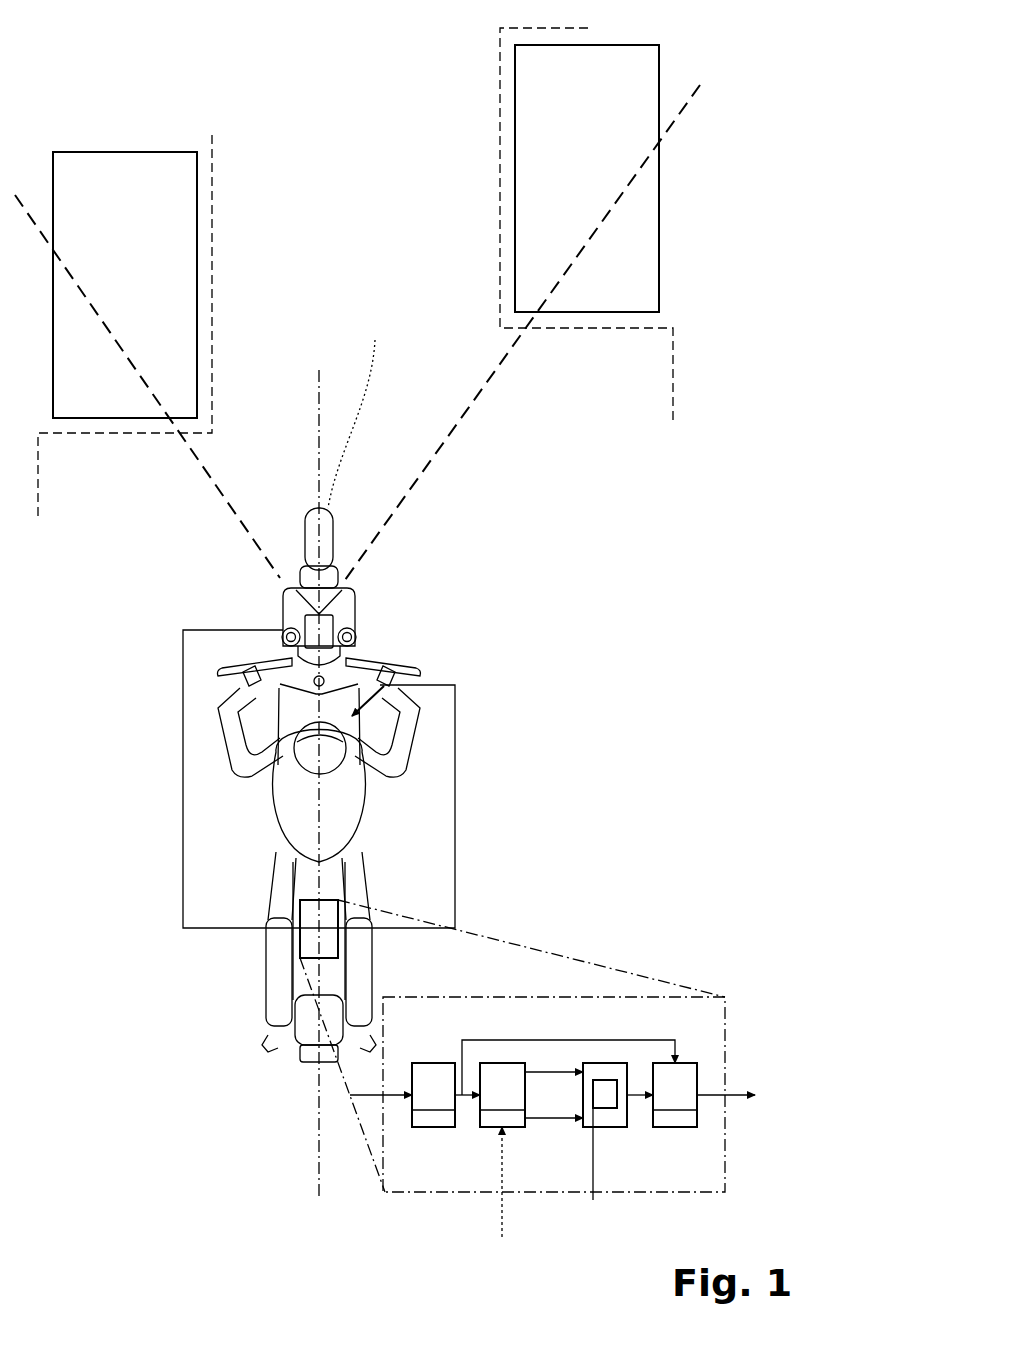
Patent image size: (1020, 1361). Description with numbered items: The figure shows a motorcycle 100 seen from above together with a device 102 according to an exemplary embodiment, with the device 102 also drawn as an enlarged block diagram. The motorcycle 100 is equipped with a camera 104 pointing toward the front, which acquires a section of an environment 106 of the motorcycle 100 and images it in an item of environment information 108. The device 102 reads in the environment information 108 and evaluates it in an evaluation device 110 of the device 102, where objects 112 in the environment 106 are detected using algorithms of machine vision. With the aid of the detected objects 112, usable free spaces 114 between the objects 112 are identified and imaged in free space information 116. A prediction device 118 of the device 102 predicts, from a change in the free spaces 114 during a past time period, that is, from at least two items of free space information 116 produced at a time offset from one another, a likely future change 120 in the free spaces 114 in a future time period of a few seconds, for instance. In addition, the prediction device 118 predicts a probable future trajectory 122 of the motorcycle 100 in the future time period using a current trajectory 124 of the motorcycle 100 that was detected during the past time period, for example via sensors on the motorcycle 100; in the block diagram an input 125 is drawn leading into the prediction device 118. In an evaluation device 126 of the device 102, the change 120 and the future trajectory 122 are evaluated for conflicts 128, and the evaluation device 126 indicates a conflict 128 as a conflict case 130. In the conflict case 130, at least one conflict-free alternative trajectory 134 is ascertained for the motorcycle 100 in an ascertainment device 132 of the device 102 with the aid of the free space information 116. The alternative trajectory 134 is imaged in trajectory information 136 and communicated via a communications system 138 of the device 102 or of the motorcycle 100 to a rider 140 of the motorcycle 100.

The motorcycle 100 is at (340, 518).
The device 102 is at (330, 940).
The camera 104 is at (300, 614).
The environment 106 is at (276, 128).
The environment information 108 is at (183, 776).
The evaluation device 110 is at (420, 1055).
The objects 112 is at (76, 150).
The free spaces 114 is at (338, 268).
The free space information 116 is at (468, 1102).
The prediction device 118 is at (472, 992).
The future change 120 is at (548, 1070).
The future trajectory 122 is at (318, 408).
The current trajectory 124 is at (318, 1166).
The input signal 125 is at (502, 1220).
The evaluation device 126 is at (607, 1078).
The conflict 128 is at (612, 1112).
The conflict case 130 is at (634, 1092).
The ascertainment device 132 is at (730, 1038).
The alternative trajectory 134 is at (376, 392).
The trajectory information 136 is at (456, 778).
The communications system 138 is at (384, 684).
The rider 140 is at (350, 802).